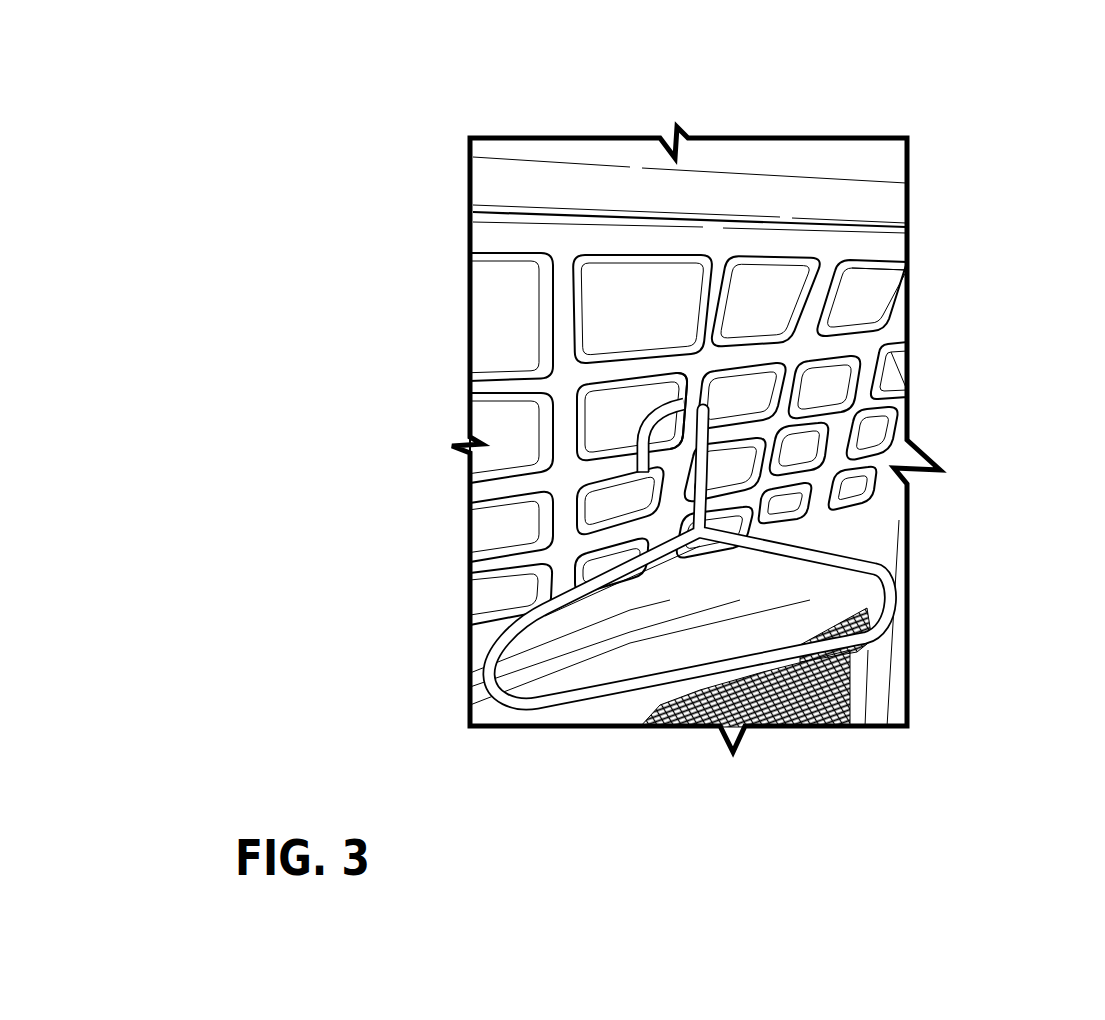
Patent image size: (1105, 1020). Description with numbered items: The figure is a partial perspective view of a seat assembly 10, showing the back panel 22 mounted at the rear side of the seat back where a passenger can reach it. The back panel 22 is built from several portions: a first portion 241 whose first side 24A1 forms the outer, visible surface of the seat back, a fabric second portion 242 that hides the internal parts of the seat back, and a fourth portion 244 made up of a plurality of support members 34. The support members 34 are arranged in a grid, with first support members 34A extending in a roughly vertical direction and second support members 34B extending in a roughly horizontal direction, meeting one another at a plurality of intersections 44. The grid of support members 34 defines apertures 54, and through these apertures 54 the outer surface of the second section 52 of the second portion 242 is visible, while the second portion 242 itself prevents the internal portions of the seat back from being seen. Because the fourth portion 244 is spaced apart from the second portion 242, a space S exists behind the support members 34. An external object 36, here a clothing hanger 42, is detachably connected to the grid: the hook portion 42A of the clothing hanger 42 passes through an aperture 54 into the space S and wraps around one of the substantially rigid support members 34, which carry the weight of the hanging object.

The seat assembly 10 is at (400, 148).
The back panel 22 is at (757, 163).
The first side 24A1 is at (753, 190).
The first portion 241 is at (823, 198).
The second portion 242 is at (739, 245).
The fourth portion 244 is at (512, 243).
The support members 34 is at (698, 426).
The first support members 34A is at (563, 602).
The second support members 34B is at (478, 580).
The space S is at (590, 424).
The intersections 44 is at (705, 363).
The second section 52 is at (815, 449).
The apertures 54 is at (884, 486).
The external objects 36 is at (910, 515).
The clothing hanger 42 is at (795, 469).
The hook portion 42A is at (705, 418).